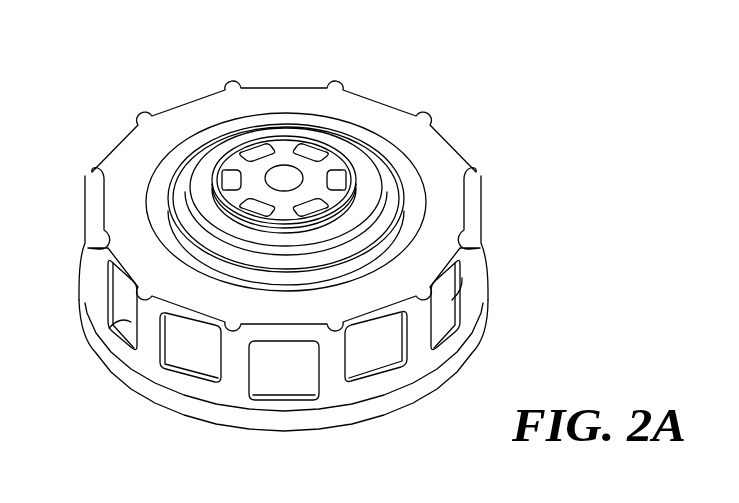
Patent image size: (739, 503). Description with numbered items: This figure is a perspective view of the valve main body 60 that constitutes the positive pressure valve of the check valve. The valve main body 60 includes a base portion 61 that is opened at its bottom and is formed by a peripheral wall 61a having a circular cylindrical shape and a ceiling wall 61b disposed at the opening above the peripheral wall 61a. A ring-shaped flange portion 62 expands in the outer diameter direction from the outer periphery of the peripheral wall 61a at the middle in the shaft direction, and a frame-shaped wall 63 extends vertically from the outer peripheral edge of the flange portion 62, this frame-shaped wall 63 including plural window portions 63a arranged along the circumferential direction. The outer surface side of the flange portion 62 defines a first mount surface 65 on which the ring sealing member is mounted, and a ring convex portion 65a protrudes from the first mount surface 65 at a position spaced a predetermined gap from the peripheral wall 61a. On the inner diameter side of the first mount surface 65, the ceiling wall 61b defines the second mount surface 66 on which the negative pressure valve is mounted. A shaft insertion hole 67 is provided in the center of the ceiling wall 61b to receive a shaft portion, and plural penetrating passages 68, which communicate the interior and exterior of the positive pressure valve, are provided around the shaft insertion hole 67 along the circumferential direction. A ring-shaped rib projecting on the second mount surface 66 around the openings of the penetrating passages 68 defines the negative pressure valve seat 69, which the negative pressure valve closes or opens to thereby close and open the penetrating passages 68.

The valve main body 60 is at (380, 88).
The base portion 61 is at (381, 199).
The peripheral wall 61a is at (372, 197).
The ceiling wall 61b is at (365, 158).
The flange portion 62 is at (373, 313).
The frame-shaped wall 63 is at (233, 386).
The window portions 63a is at (120, 330).
The first mount surface 65 is at (137, 256).
The ring convex portion 65a is at (153, 218).
The second mount surface 66 is at (243, 170).
The shaft insertion hole 67 is at (284, 137).
The penetrating passages 68 is at (318, 148).
The negative pressure valve seat 69 is at (283, 167).